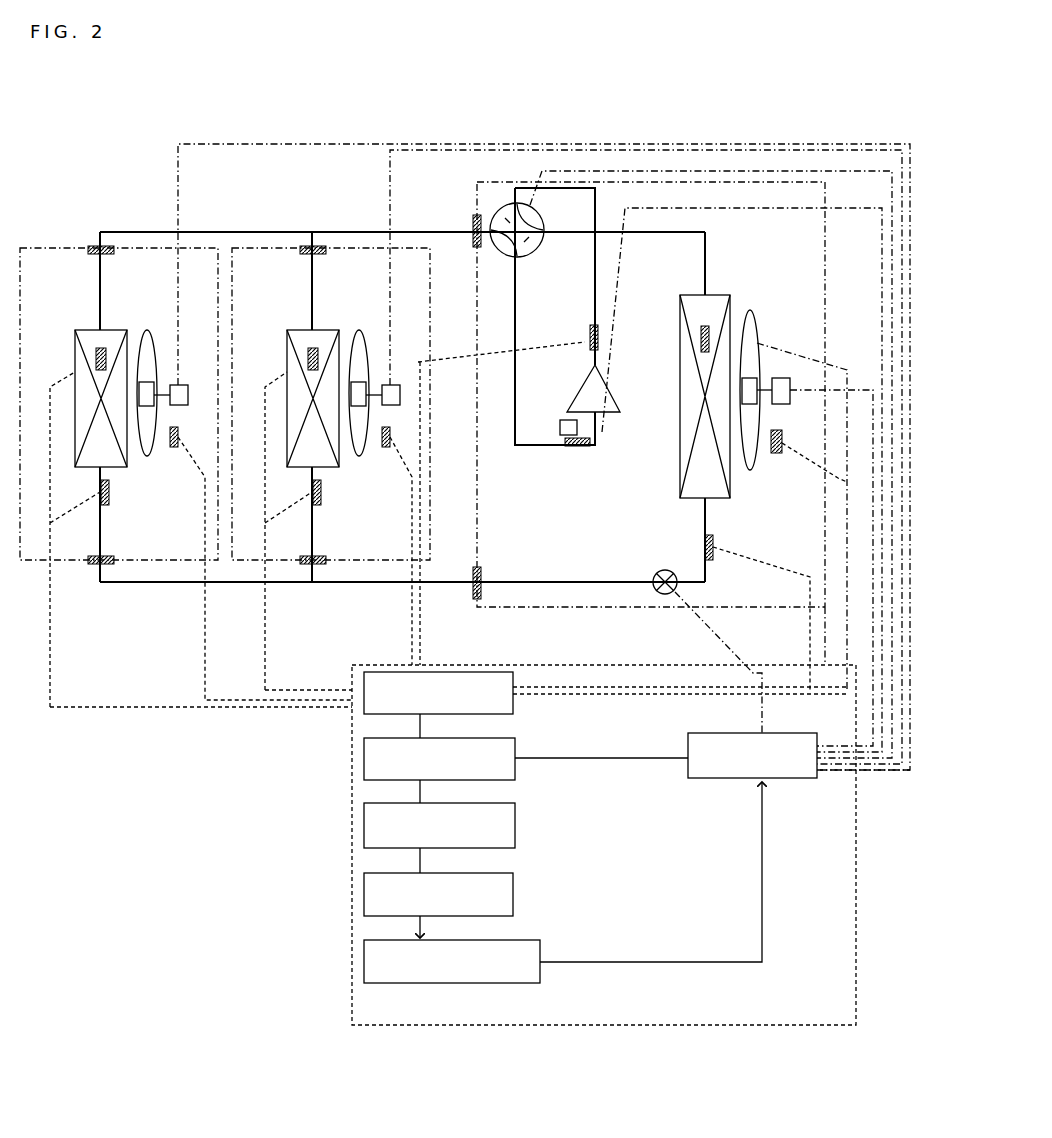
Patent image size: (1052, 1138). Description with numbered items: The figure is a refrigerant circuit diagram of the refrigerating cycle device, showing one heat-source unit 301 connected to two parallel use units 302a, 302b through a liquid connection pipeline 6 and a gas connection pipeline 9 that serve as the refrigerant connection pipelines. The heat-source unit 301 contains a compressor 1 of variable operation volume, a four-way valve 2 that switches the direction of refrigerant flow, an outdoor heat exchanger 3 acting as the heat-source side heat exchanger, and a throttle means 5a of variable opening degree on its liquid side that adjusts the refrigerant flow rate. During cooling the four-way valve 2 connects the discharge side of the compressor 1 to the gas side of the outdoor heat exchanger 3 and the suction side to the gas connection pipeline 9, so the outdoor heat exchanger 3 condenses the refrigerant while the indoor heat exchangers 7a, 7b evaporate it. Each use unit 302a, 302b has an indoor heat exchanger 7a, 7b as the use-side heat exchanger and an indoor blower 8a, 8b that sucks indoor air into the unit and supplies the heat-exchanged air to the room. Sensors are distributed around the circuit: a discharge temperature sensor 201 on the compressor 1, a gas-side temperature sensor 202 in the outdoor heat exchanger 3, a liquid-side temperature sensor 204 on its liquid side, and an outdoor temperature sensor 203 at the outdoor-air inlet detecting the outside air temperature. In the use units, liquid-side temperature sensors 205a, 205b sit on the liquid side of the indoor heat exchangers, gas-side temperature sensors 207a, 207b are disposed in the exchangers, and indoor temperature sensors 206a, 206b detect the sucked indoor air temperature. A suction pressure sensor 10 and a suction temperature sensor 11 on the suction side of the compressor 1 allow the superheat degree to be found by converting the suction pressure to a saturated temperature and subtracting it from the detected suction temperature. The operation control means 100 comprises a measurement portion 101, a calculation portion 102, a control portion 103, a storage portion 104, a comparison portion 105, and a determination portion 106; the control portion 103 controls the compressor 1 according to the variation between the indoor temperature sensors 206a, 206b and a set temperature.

The compressor 1 is at (605, 398).
The four-way valve 2 is at (492, 222).
The outdoor heat exchanger 3 is at (690, 300).
The throttle means 5a is at (668, 595).
The liquid connection pipeline 6 is at (477, 598).
The indoor heat exchanger 7a is at (321, 492).
The indoor heat exchanger 7b is at (109, 492).
The indoor blower 8a is at (390, 385).
The indoor blower 8b is at (178, 385).
The gas connection pipeline 9 is at (470, 232).
The suction pressure sensor 10 is at (560, 428).
The suction temperature sensor 11 is at (570, 446).
The operation control means 100 is at (598, 1025).
The measurement portion 101 is at (513, 708).
The calculation portion 102 is at (515, 780).
The control portion 103 is at (800, 778).
The storage portion 104 is at (515, 848).
The comparison portion 105 is at (513, 916).
The determination portion 106 is at (540, 983).
The discharge temperature sensor 201 is at (590, 335).
The gas-side temperature sensor 202 is at (700, 340).
The outdoor temperature sensor 203 is at (780, 453).
The liquid-side temperature sensor 204 is at (713, 555).
The liquid-side temperature sensor 205a is at (312, 560).
The liquid-side temperature sensor 205b is at (100, 560).
The indoor temperature sensor 206a is at (387, 447).
The indoor temperature sensor 206b is at (175, 447).
The gas-side temperature sensor 207a is at (312, 348).
The gas-side temperature sensor 207b is at (100, 348).
The heat-source unit 301 is at (505, 607).
The use unit 302a is at (317, 540).
The use unit 302b is at (105, 540).